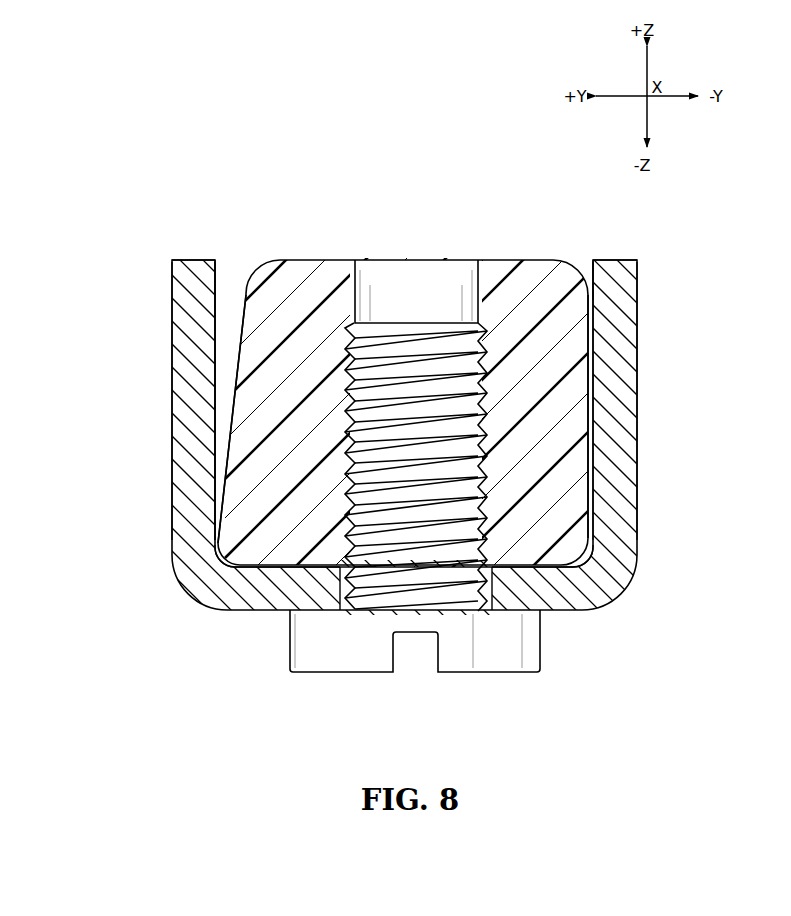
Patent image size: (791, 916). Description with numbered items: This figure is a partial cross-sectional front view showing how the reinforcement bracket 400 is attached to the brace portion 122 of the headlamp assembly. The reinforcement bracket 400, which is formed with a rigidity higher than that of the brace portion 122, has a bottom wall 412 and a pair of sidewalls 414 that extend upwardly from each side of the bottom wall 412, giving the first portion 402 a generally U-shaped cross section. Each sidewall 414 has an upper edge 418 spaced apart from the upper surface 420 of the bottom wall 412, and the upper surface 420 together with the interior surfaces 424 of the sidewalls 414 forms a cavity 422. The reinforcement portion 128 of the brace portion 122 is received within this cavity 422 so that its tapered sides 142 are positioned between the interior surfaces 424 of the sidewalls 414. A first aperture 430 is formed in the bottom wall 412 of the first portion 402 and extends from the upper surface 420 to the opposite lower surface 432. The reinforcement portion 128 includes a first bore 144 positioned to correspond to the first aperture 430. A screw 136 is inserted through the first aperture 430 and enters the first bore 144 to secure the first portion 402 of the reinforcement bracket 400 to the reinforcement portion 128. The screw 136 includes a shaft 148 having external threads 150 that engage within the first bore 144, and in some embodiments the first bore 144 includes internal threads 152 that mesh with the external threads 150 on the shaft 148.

The reinforcement bracket 400 is at (110, 433).
The first portion 402 is at (160, 463).
The sidewalls 414 is at (183, 342).
The upper edge 418 is at (192, 260).
The bottom wall 412 is at (555, 605).
The lower surface 432 is at (272, 610).
The upper surface 420 is at (282, 567).
The first aperture 430 is at (500, 587).
The cavity 422 is at (233, 270).
The interior surfaces 424 is at (210, 304).
The brace portion 122 is at (486, 231).
The reinforcement portion 128 is at (530, 268).
The sides 142 is at (222, 486).
The shaft 148 is at (437, 382).
The first bore 144 is at (393, 268).
The external threads 150 is at (351, 340).
The internal threads 152 is at (487, 353).
The screw 136 is at (473, 686).